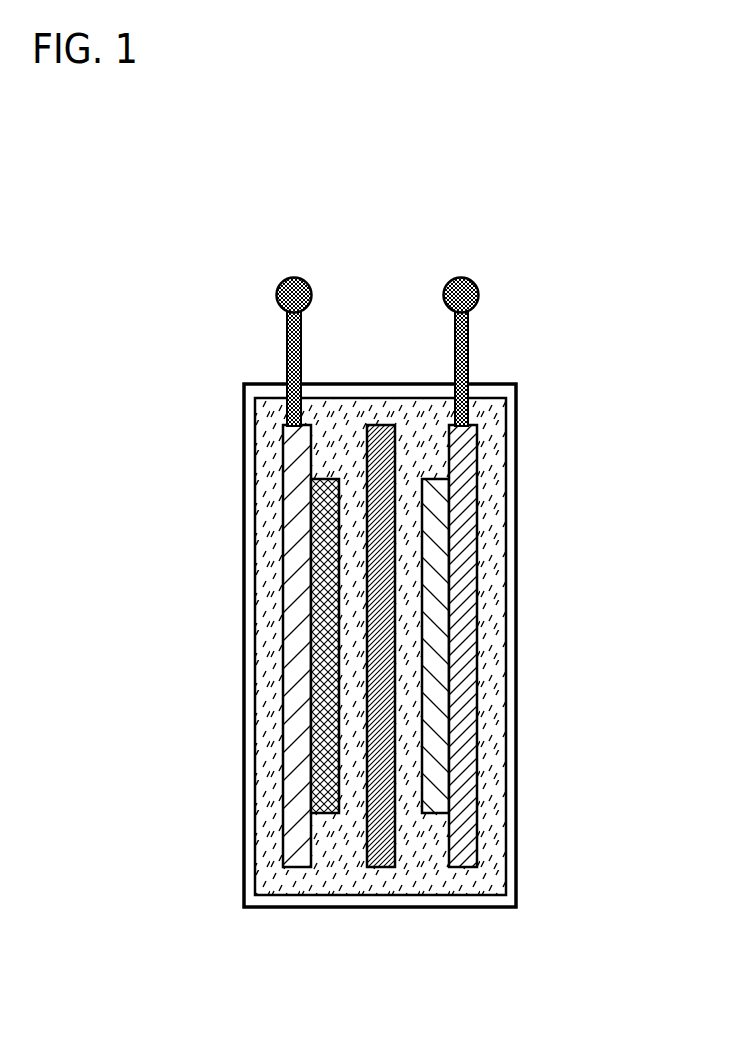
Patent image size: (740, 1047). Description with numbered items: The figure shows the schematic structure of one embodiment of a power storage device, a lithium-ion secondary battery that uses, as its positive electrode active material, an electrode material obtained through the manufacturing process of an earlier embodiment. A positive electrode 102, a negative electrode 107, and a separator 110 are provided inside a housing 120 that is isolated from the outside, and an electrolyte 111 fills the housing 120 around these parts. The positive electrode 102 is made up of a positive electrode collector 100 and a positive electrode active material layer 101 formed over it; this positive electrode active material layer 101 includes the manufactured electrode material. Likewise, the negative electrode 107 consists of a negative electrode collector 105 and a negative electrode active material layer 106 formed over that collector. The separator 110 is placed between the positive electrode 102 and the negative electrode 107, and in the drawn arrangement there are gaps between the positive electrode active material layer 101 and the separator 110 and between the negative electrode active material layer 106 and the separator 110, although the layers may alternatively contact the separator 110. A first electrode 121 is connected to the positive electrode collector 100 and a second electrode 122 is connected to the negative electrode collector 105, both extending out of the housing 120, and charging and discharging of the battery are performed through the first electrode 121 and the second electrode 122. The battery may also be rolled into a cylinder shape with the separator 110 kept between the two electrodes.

The positive electrode collector 100 is at (290, 868).
The positive electrode active material layer 101 is at (325, 813).
The positive electrode 102 is at (311, 726).
The negative electrode collector 105 is at (473, 868).
The negative electrode active material layer 106 is at (433, 813).
The negative electrode 107 is at (481, 723).
The separator 110 is at (377, 425).
The electrolyte 111 is at (503, 412).
The housing 120 is at (512, 462).
The first electrode 121 is at (312, 295).
The second electrode 122 is at (480, 290).